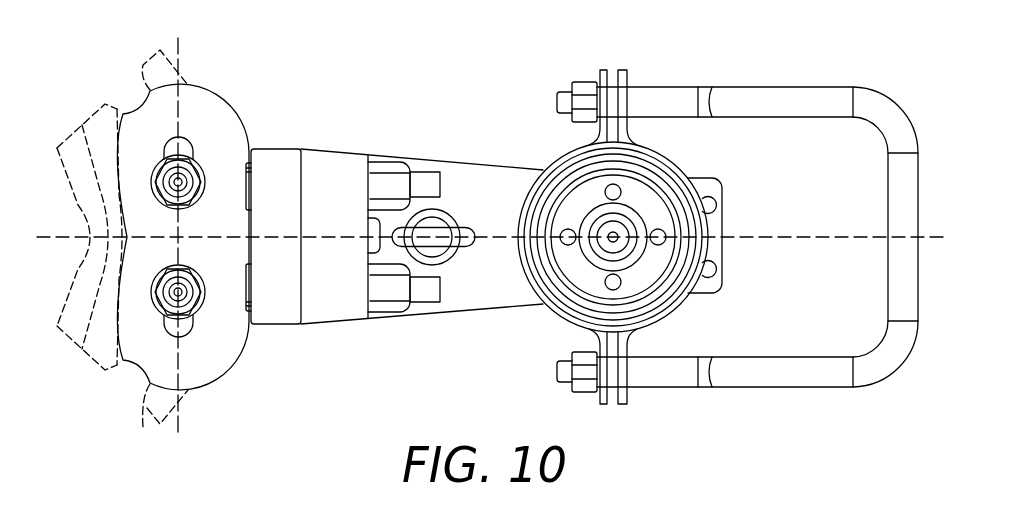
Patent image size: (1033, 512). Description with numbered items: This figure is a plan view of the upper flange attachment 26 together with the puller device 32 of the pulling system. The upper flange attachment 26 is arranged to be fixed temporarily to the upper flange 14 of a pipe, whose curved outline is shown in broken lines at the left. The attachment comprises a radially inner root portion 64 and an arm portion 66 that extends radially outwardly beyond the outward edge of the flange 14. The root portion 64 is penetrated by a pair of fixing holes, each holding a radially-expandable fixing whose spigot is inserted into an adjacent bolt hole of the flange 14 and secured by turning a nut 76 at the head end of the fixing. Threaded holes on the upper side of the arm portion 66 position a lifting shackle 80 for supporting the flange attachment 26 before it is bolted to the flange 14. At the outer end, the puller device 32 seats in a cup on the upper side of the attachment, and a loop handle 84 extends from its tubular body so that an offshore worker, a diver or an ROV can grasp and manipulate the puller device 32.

The upper flange 14 is at (143, 430).
The upper flange attachment 26 is at (409, 76).
The puller device 32 is at (660, 302).
The root portion 64 is at (221, 100).
The arm portion 66 is at (457, 311).
The nut 76 is at (154, 300).
The lifting shackle 80 is at (459, 228).
The loop handle 84 is at (775, 87).